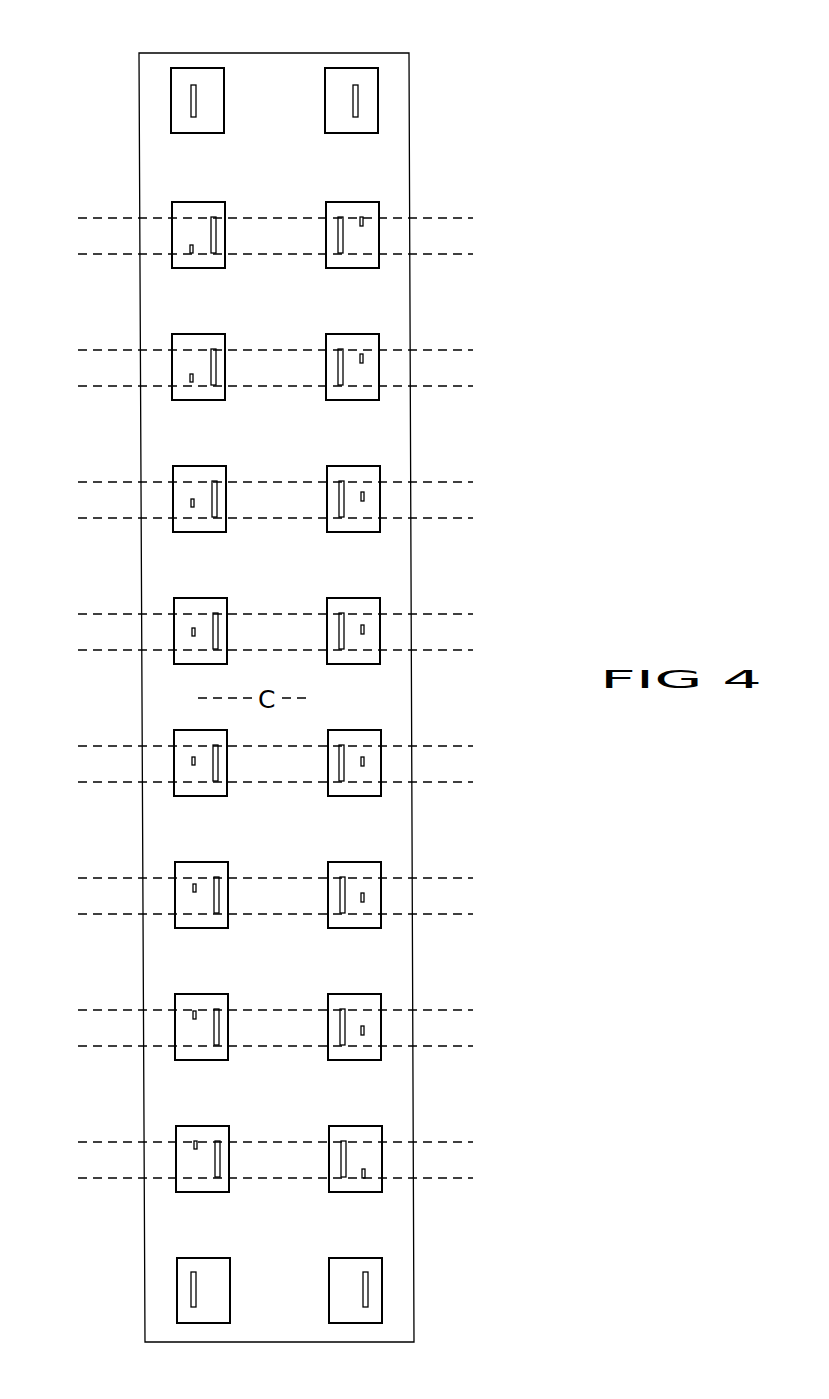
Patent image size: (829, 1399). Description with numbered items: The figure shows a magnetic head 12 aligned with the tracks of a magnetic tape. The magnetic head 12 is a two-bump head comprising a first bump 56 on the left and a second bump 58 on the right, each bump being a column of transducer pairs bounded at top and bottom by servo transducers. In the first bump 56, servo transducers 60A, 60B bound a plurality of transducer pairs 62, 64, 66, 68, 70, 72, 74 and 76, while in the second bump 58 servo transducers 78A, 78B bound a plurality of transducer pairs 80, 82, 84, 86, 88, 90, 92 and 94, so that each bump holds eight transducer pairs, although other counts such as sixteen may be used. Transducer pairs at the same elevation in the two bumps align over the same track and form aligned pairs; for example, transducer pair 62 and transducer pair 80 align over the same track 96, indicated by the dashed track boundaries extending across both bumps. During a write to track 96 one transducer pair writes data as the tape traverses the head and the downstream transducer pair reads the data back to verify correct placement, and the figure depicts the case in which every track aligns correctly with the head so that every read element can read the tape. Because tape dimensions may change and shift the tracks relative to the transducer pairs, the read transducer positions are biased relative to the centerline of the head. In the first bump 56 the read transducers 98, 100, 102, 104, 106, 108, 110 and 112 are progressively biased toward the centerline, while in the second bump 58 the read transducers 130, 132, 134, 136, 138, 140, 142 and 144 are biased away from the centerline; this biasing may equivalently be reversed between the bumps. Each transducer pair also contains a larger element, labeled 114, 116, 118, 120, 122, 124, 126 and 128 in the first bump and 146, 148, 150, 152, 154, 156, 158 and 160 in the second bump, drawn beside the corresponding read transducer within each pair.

The magnetic head 12 is at (405, 75).
The first bump 56 is at (193, 40).
The second bump 58 is at (343, 40).
The servo transducer 60A is at (171, 103).
The servo transducer 60B is at (177, 1290).
The servo transducer 78A is at (373, 112).
The servo transducer 78B is at (382, 1288).
The transducer pair 62 is at (172, 205).
The transducer pair 64 is at (172, 337).
The transducer pair 66 is at (173, 469).
The transducer pair 68 is at (174, 601).
The transducer pair 70 is at (174, 733).
The transducer pair 72 is at (175, 865).
The transducer pair 74 is at (175, 997).
The transducer pair 76 is at (176, 1128).
The transducer pair 80 is at (357, 202).
The transducer pair 82 is at (357, 334).
The transducer pair 84 is at (358, 466).
The transducer pair 86 is at (358, 598).
The transducer pair 88 is at (367, 730).
The transducer pair 90 is at (356, 862).
The transducer pair 92 is at (357, 994).
The transducer pair 94 is at (357, 1126).
The track 96 is at (423, 240).
The read transducer 98 is at (191, 253).
The read transducer 100 is at (191, 382).
The read transducer 102 is at (192, 507).
The read transducer 104 is at (193, 640).
The read transducer 106 is at (193, 766).
The read transducer 108 is at (194, 893).
The read transducer 110 is at (194, 1020).
The read transducer 112 is at (194, 1150).
The slot 114 is at (213, 217).
The slot 116 is at (213, 349).
The slot 118 is at (214, 481).
The slot 120 is at (215, 613).
The slot 122 is at (215, 750).
The slot 124 is at (216, 877).
The slot 126 is at (216, 1009).
The slot 128 is at (217, 1141).
The read transducer 130 is at (362, 219).
The read transducer 132 is at (362, 354).
The read transducer 134 is at (363, 492).
The read transducer 136 is at (363, 625).
The read transducer 138 is at (362, 757).
The read transducer 140 is at (361, 893).
The read transducer 142 is at (362, 1026).
The read transducer 144 is at (363, 1178).
The slot 146 is at (340, 217).
The slot 148 is at (340, 349).
The slot 150 is at (341, 481).
The slot 152 is at (341, 613).
The slot 154 is at (341, 782).
The slot 156 is at (341, 877).
The slot 158 is at (341, 1009).
The slot 160 is at (343, 1141).